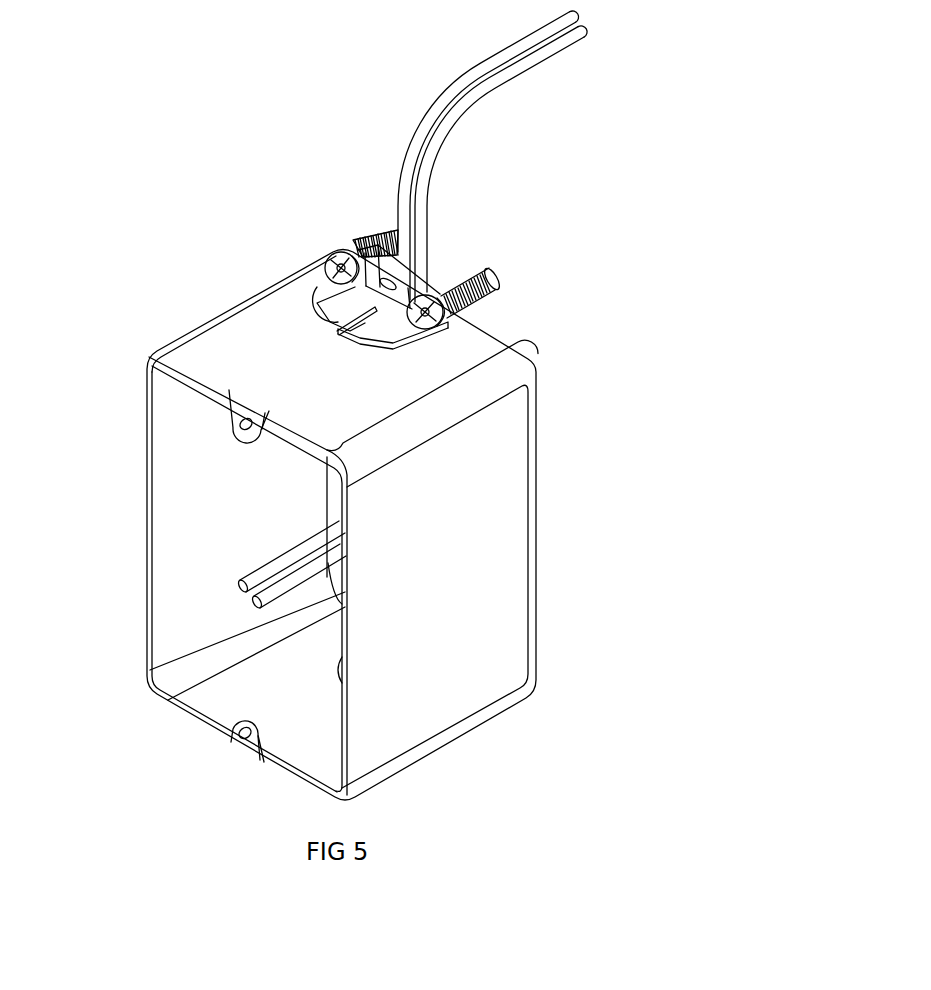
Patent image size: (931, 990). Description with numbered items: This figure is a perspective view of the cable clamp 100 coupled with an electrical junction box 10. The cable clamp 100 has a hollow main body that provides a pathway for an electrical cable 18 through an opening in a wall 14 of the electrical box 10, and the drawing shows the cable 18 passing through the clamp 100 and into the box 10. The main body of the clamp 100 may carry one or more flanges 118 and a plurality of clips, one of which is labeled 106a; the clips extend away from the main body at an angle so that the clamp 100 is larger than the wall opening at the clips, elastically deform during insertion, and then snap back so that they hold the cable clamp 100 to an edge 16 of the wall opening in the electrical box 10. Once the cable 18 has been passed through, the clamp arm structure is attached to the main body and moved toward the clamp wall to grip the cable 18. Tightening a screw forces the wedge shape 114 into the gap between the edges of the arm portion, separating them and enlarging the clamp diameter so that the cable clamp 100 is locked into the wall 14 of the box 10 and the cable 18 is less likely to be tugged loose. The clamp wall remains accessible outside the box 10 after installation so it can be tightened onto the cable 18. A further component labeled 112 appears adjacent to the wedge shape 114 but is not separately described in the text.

The electrical junction box 10 is at (107, 361).
The wall 14 is at (295, 343).
The electrical cable 18 is at (425, 228).
The cable clamp 100 is at (388, 238).
The clamp screw 112 is at (428, 287).
The wedge shape 114 is at (347, 322).
The flange 118 is at (327, 298).
The edge 16 is at (408, 327).
The base plate portion 106a is at (428, 343).